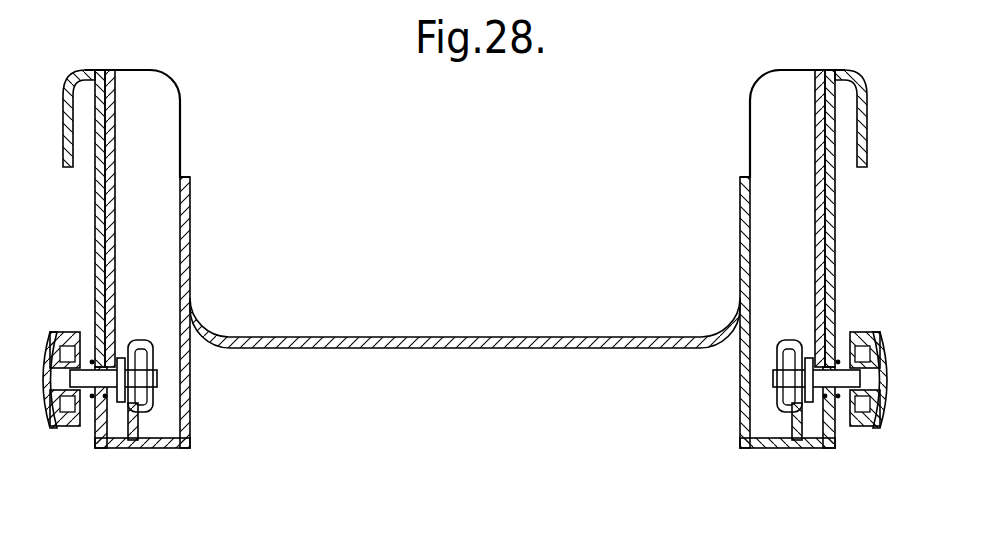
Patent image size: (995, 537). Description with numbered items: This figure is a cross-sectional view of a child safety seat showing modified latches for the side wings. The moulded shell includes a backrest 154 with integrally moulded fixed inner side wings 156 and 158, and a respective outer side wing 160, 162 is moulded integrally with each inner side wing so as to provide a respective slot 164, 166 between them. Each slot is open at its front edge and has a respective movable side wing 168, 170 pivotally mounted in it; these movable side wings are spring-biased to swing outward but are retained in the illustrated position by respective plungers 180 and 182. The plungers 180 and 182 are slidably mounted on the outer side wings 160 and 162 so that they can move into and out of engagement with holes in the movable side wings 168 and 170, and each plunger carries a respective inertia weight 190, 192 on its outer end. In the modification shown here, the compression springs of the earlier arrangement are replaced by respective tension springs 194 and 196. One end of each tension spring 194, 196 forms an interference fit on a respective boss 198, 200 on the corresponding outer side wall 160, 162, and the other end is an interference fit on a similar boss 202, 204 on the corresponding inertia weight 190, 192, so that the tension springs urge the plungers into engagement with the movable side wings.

The backrest 154 is at (332, 340).
The fixed inner side wing 156 is at (740, 256).
The fixed inner side wing 158 is at (182, 258).
The outer side wing 160 is at (858, 80).
The outer side wing 162 is at (84, 74).
The slot 164 is at (758, 155).
The slot 166 is at (168, 176).
The movable side wing 168 is at (815, 126).
The movable side wing 170 is at (112, 93).
The plunger 180 is at (772, 378).
The plunger 182 is at (158, 380).
The inertia weight 190 is at (866, 330).
The inertia weight 192 is at (66, 333).
The tension spring 194 is at (835, 395).
The tension spring 196 is at (83, 392).
The boss 198 is at (830, 362).
The boss 200 is at (115, 345).
The boss 202 is at (877, 412).
The boss 204 is at (52, 405).